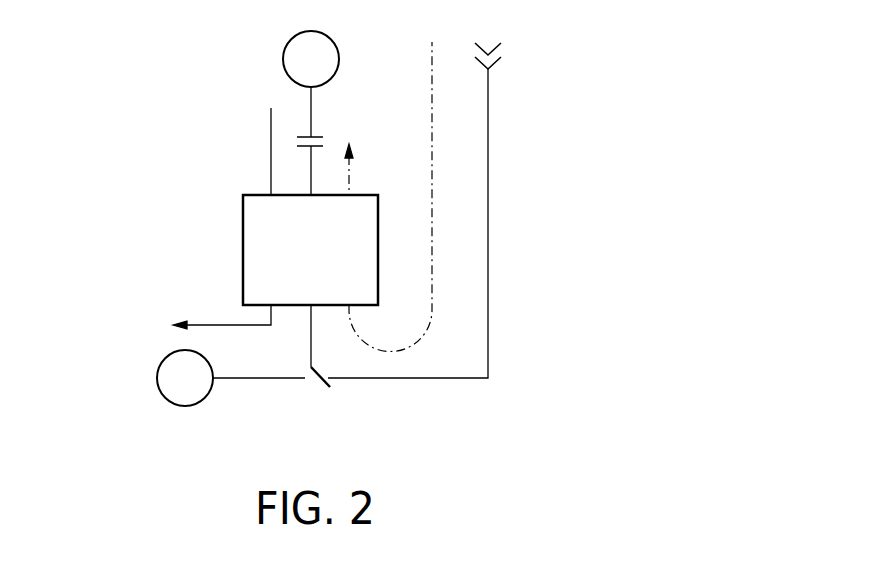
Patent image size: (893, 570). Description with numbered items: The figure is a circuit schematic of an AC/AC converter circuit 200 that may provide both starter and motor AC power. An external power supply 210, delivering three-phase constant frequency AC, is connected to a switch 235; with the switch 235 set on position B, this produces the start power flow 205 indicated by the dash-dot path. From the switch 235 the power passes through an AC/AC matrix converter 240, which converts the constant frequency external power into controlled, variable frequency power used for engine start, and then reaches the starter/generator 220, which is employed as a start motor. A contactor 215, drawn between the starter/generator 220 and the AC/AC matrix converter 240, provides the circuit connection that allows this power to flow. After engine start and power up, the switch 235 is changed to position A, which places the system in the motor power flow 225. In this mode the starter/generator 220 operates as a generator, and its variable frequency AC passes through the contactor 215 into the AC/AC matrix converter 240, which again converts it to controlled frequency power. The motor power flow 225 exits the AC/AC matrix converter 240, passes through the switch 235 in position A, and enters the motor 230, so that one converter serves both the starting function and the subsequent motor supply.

The AC/AC converter circuit 200 is at (167, 135).
The start power flow 205 is at (432, 124).
The external power supply 210 is at (502, 57).
The contactor 215 is at (297, 142).
The starter/generator 220 is at (283, 59).
The motor power flow 225 is at (196, 325).
The motor 230 is at (157, 376).
The switch 235 is at (318, 390).
The AC/AC matrix converter 240 is at (243, 243).